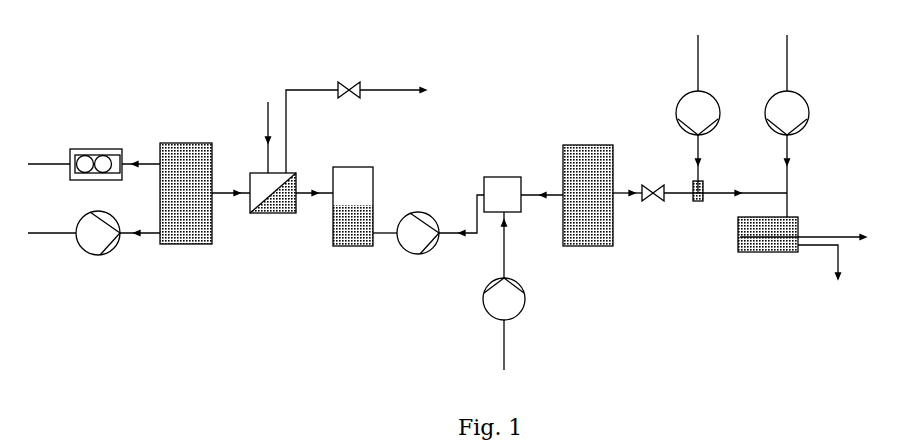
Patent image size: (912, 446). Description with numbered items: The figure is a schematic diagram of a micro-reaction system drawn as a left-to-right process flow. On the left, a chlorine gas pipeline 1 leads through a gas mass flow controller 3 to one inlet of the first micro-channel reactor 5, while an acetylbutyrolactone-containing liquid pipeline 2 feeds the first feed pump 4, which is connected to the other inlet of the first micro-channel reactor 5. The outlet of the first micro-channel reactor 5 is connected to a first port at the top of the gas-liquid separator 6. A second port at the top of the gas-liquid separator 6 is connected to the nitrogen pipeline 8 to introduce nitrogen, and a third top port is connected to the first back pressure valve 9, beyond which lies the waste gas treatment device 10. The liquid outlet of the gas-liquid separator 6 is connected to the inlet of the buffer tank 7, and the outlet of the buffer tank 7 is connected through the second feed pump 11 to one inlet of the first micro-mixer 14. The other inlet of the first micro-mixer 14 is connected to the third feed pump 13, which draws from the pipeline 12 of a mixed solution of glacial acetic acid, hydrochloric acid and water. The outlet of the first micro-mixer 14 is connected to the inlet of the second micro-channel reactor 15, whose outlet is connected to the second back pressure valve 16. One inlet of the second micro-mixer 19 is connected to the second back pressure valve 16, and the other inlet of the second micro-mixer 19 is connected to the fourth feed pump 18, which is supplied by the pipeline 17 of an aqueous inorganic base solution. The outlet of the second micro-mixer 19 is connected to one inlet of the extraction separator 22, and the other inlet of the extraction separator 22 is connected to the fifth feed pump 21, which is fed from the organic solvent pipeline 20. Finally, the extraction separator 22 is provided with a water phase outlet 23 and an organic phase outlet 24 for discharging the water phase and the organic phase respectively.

The chlorine gas pipeline 1 is at (45, 167).
The acetylbutyrolactone-containing liquid pipeline 2 is at (47, 235).
The gas mass flow controller 3 is at (98, 180).
The first feed pump 4 is at (100, 253).
The first micro-channel reactor 5 is at (205, 212).
The gas-liquid separator 6 is at (285, 217).
The buffer tank 7 is at (365, 247).
The nitrogen pipeline 8 is at (266, 135).
The first back pressure valve 9 is at (343, 83).
The waste gas treatment device 10 is at (412, 88).
The second feed pump 11 is at (419, 257).
The pipeline of a mixed solution of glacial acetic acid, hydrochloric acid and water 12 is at (505, 355).
The third feed pump 13 is at (503, 302).
The first micro-mixer 14 is at (513, 208).
The second micro-channel reactor 15 is at (605, 227).
The second back pressure valve 16 is at (648, 190).
The pipeline of an aqueous inorganic base solution 17 is at (697, 62).
The fourth feed pump 18 is at (697, 113).
The second micro-mixer 19 is at (700, 198).
The organic solvent pipeline 20 is at (785, 62).
The fifth feed pump 21 is at (775, 93).
The extraction separator 22 is at (782, 247).
The water phase outlet 23 is at (868, 240).
The organic phase outlet 24 is at (840, 267).